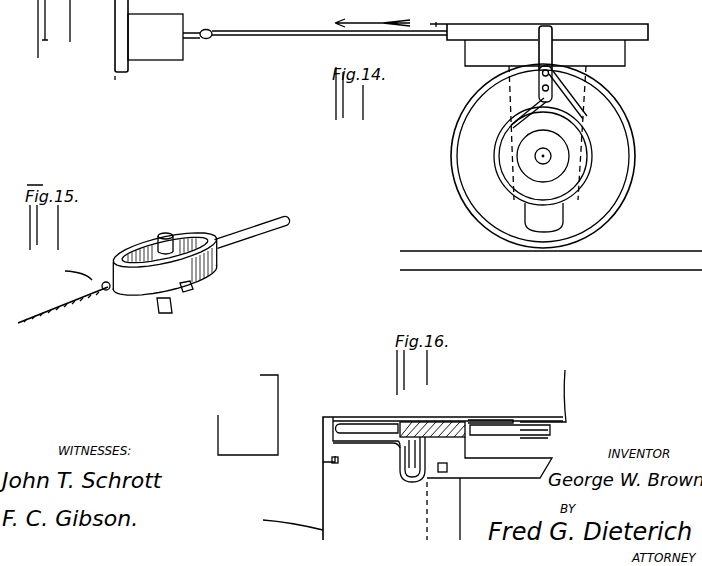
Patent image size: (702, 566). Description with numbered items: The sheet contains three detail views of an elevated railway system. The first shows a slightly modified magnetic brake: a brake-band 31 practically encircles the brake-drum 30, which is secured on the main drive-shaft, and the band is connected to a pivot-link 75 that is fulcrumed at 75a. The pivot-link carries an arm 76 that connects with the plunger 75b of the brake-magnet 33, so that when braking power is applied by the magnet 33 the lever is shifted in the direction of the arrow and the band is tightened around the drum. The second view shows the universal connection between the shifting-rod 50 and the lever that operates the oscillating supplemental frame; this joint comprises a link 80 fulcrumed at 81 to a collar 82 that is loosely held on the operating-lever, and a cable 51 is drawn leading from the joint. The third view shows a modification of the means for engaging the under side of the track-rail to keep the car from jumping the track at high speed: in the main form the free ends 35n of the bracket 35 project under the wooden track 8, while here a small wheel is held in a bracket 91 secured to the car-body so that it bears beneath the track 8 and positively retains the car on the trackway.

In FIG. 14, the brake-magnet 33 is at (155, 37).
In FIG. 14, the plunger 75b is at (206, 40).
In FIG. 14, the arm 76 is at (315, 42).
In FIG. 14, the pivot-link 75 is at (540, 70).
In FIG. 14, the fulcrum 75a is at (539, 86).
In FIG. 14, the brake-band 31 is at (591, 154).
In FIG. 14, the brake-drum 30 is at (564, 176).
In FIG. 15, the collar 82 is at (141, 247).
In FIG. 15, the shifting-rod 50 is at (252, 230).
In FIG. 15, the cable 51 is at (62, 302).
In FIG. 15, the link 80 is at (141, 273).
In FIG. 15, the fulcrum 81 is at (187, 291).
In FIG. 16, the trackway 8 is at (418, 437).
In FIG. 16, the bracket 35 is at (330, 461).
In FIG. 16, the free ends of the bracket 35n is at (384, 446).
In FIG. 16, the bracket 91 is at (409, 484).